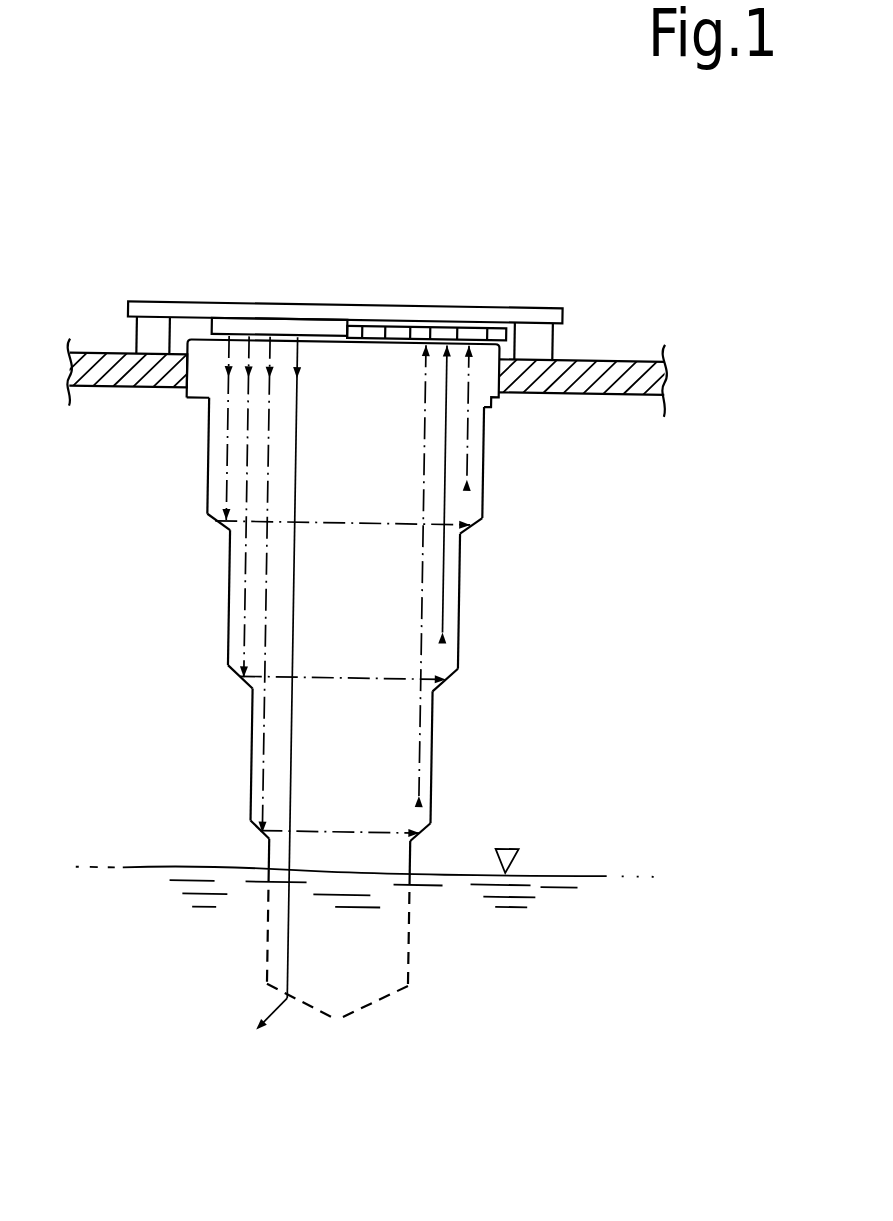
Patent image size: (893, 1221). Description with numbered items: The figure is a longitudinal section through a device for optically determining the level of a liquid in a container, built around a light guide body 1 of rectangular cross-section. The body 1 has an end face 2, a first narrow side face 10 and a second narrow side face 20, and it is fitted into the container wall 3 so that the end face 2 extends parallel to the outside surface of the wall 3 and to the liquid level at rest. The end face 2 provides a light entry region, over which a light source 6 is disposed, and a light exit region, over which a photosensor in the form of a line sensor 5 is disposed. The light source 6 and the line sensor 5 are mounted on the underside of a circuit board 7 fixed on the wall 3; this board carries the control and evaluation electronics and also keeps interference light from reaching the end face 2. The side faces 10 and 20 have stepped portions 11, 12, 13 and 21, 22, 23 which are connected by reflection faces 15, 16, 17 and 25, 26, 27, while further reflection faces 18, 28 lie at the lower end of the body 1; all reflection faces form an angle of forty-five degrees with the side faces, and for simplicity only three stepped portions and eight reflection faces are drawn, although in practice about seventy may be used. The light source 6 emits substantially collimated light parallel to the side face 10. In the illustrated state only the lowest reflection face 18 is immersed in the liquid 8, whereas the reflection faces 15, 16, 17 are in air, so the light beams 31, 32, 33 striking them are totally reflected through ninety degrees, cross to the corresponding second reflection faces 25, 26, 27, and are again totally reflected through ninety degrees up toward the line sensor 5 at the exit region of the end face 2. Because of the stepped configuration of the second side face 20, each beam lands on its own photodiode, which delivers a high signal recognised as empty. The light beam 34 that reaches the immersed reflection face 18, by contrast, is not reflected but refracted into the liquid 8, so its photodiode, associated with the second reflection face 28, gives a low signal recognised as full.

The light guide body 1 is at (372, 469).
The end face 2 is at (189, 342).
The container wall 3 is at (614, 358).
The line sensor 5 is at (394, 329).
The light source 6 is at (289, 341).
The circuit board 7 is at (444, 312).
The liquid 8 is at (537, 973).
The first narrow side face 10 is at (205, 420).
The stepped portion 11 is at (230, 567).
The stepped portion 12 is at (254, 732).
The stepped portion 13 is at (273, 921).
The reflection face 15 is at (212, 522).
The reflection face 16 is at (241, 680).
The reflection face 17 is at (266, 833).
The reflection face 18 is at (324, 1014).
The second narrow side face 20 is at (481, 445).
The stepped portion 21 is at (462, 578).
The stepped portion 22 is at (435, 744).
The stepped portion 23 is at (418, 932).
The second reflection face 25 is at (469, 533).
The second reflection face 26 is at (446, 678).
The second reflection face 27 is at (424, 834).
The second reflection face 28 is at (383, 1008).
The light beam 31 is at (222, 442).
The light beam 32 is at (246, 610).
The light beam 33 is at (268, 766).
The light beam 34 is at (290, 953).